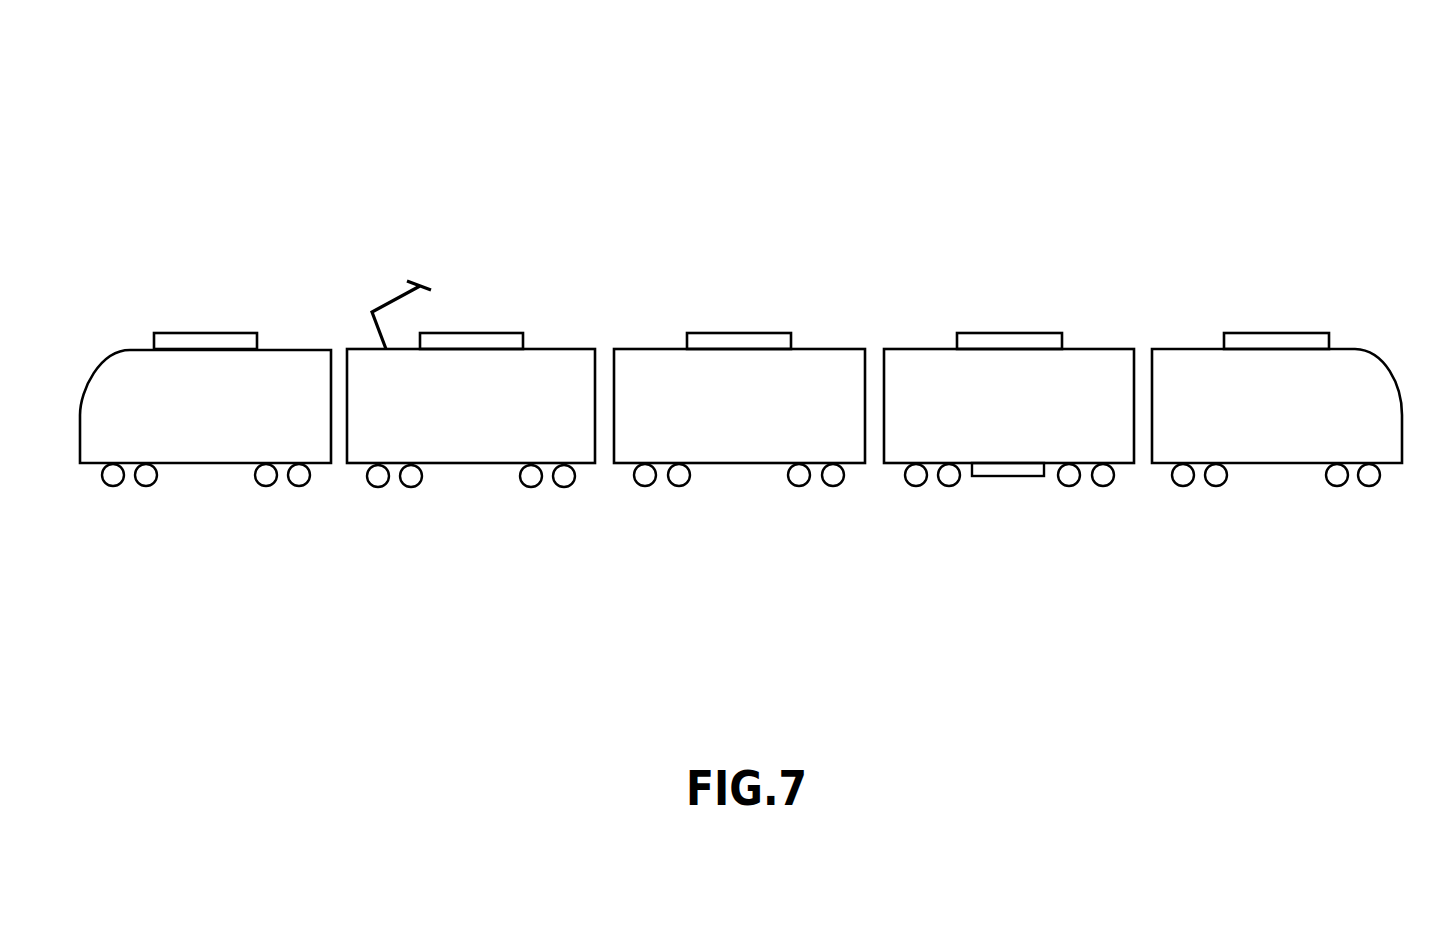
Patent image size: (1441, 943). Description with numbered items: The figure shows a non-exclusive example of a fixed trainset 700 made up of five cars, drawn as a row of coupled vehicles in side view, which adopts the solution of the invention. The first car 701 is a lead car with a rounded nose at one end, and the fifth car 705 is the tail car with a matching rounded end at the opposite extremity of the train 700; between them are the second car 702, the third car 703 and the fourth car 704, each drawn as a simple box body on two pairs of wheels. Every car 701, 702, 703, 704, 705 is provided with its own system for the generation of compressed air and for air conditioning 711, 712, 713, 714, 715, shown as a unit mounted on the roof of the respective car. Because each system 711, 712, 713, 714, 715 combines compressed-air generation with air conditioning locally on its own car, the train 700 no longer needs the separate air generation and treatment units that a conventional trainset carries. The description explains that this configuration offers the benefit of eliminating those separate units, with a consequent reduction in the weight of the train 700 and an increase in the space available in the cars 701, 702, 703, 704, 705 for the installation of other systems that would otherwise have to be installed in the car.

The train 700 is at (1352, 235).
The car 701 is at (120, 388).
The car 702 is at (457, 432).
The car 703 is at (733, 432).
The car 704 is at (1105, 380).
The car 705 is at (1380, 430).
The system for the generation of compressed air and for air conditioning 711 is at (227, 342).
The system for the generation of compressed air and for air conditioning 712 is at (483, 342).
The system for the generation of compressed air and for air conditioning 713 is at (733, 342).
The system for the generation of compressed air and for air conditioning 714 is at (998, 342).
The system for the generation of compressed air and for air conditioning 715 is at (1245, 342).